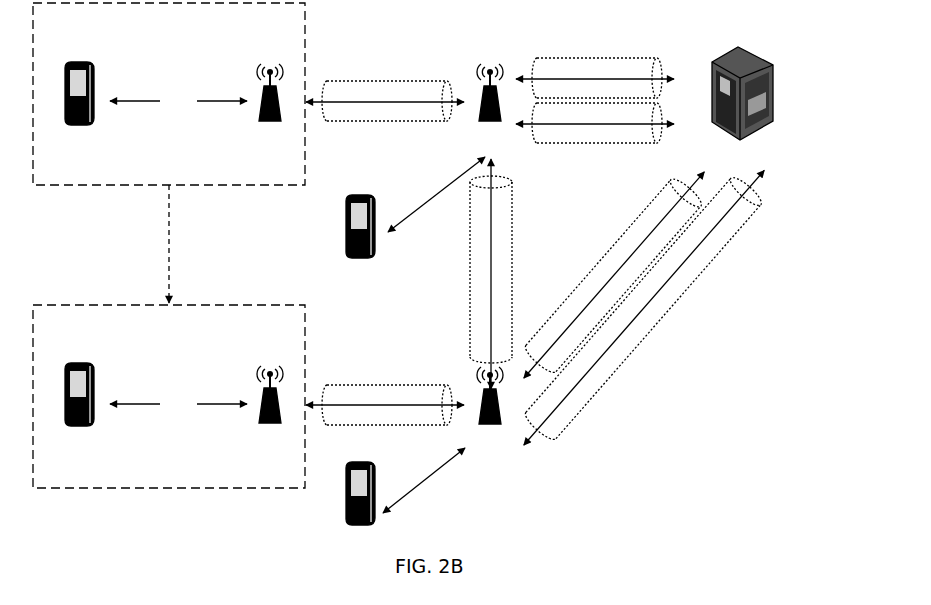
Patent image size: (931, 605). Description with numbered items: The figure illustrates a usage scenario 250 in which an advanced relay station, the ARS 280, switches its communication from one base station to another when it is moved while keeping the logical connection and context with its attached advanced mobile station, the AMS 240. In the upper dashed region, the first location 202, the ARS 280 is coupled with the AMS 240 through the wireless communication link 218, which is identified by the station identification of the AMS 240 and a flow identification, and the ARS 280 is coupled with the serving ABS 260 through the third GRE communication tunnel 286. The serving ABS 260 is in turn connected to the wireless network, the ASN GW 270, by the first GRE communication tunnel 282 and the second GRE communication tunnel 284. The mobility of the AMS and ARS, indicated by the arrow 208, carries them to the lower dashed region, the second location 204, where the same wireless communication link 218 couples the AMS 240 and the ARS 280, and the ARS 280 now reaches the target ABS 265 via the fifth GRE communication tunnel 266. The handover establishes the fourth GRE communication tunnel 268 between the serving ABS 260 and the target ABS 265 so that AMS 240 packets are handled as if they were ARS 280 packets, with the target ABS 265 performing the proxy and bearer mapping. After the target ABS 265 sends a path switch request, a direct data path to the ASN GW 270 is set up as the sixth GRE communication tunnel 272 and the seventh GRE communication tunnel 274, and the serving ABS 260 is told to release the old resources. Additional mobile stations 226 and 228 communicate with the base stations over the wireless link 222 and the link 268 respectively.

The location 1 202 is at (169, 94).
The location 2 204 is at (169, 396).
The AMS and ARS mobility 208 is at (169, 244).
The wireless communication link 218 is at (178, 253).
The wireless link between mobile device 226 and access point 260 222 is at (436, 194).
The mobile device 226 is at (362, 241).
The mobile device 228 is at (362, 507).
The AMS 240 is at (77, 258).
The usage scenario 250 is at (62, 566).
The serving ABS 260 is at (488, 107).
The target ABS 265 is at (490, 409).
The GRE communication tunnel 5 266 is at (385, 405).
The GRE communication tunnel 4 268 is at (447, 336).
The ASN GW 270 is at (742, 107).
The GRE communication tunnel 6 272 is at (614, 275).
The GRE communication tunnel 7 274 is at (644, 307).
The ARS 280 is at (272, 259).
The GRE communication tunnel 1 282 is at (595, 78).
The GRE communication tunnel 2 284 is at (595, 123).
The GRE communication tunnel 3 286 is at (385, 101).